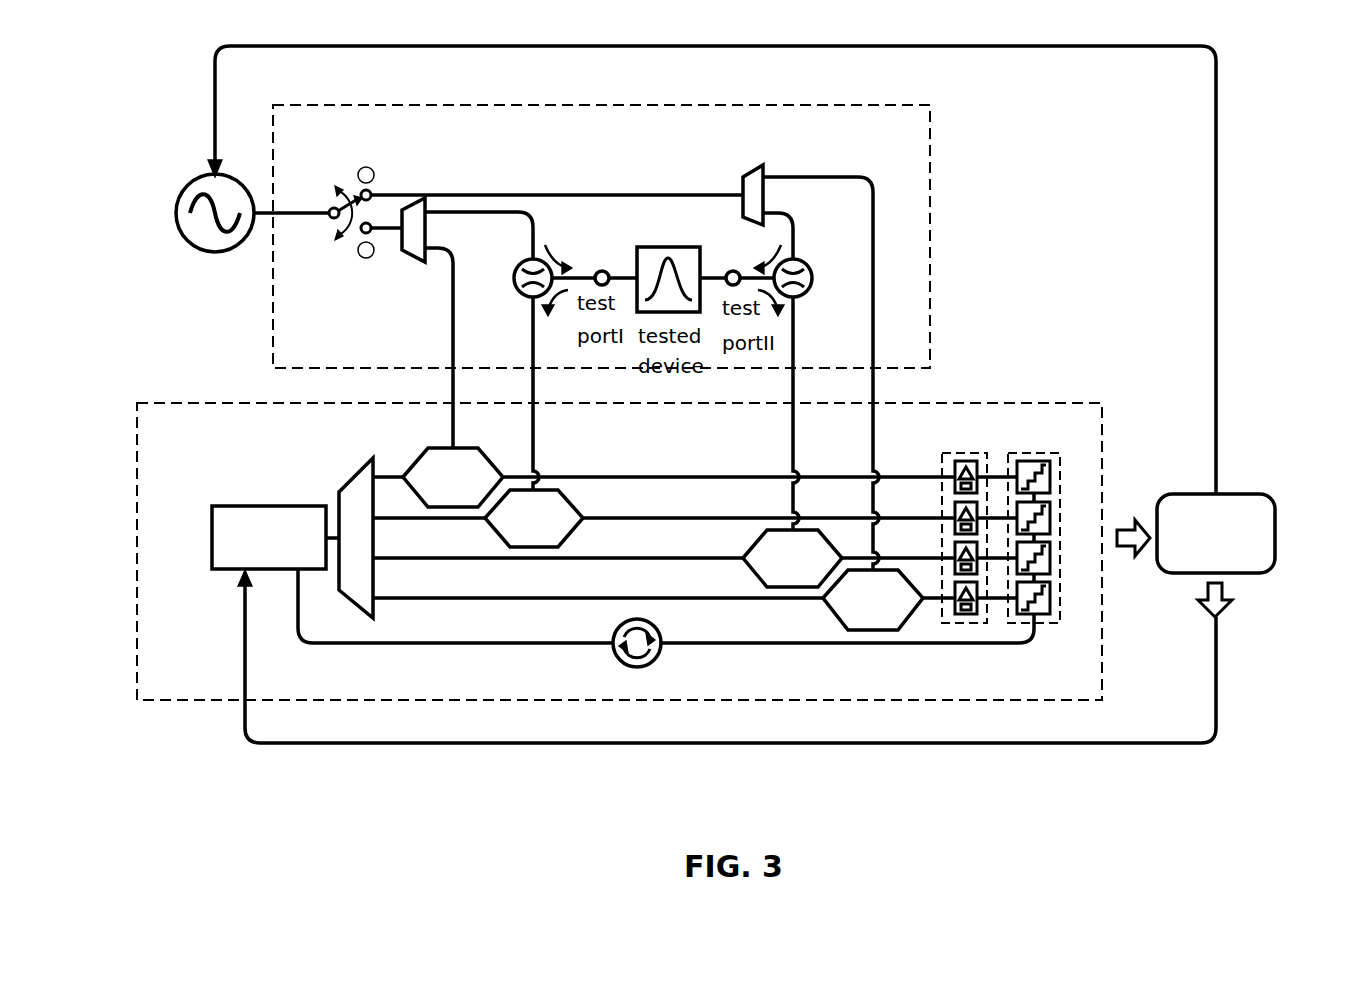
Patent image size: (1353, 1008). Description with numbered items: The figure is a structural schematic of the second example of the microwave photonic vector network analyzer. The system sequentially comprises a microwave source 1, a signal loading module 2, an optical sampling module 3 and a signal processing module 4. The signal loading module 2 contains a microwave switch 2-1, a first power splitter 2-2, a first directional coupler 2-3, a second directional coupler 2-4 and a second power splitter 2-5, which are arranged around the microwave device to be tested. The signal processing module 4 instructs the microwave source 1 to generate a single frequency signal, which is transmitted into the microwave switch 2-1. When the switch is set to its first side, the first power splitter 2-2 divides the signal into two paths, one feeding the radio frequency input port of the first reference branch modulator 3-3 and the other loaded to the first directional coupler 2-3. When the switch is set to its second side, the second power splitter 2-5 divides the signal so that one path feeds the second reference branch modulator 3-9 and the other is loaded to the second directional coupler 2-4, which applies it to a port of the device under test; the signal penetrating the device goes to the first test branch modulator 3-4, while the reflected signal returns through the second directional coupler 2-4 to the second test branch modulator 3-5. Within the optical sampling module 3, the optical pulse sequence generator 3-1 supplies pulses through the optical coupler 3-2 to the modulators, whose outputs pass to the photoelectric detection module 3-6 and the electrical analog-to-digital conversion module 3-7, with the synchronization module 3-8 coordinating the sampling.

The microwave source 1 is at (198, 250).
The signal loading module 2 is at (930, 348).
The microwave switch 2-1 is at (358, 198).
The first power splitter 2-2 is at (412, 255).
The first directional coupler 2-3 is at (520, 300).
The second directional coupler 2-4 is at (797, 297).
The second power splitter 2-5 is at (750, 220).
The optical sampling module 3 is at (1100, 628).
The optical pulse sequence generator 3-1 is at (223, 570).
The optical coupler 3-2 is at (353, 473).
The first reference branch modulator 3-3 is at (420, 462).
The first test branch modulator 3-4 is at (573, 532).
The second test branch modulator 3-5 is at (755, 572).
The photoelectric detection module 3-6 is at (940, 630).
The electrical analog-to-digital conversion module 3-7 is at (1055, 625).
The synchronization module 3-8 is at (613, 652).
The second reference branch modulator 3-9 is at (833, 613).
The signal processing module 4 is at (1273, 548).